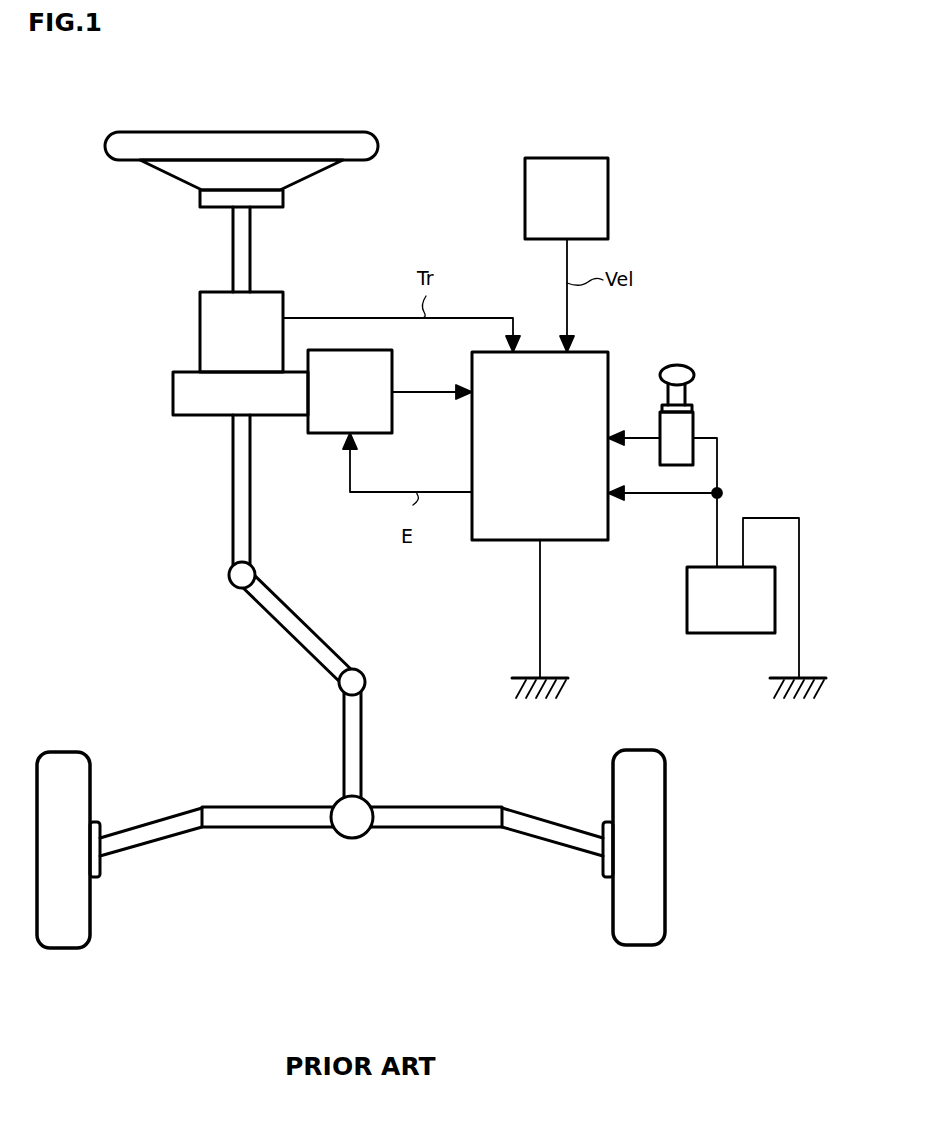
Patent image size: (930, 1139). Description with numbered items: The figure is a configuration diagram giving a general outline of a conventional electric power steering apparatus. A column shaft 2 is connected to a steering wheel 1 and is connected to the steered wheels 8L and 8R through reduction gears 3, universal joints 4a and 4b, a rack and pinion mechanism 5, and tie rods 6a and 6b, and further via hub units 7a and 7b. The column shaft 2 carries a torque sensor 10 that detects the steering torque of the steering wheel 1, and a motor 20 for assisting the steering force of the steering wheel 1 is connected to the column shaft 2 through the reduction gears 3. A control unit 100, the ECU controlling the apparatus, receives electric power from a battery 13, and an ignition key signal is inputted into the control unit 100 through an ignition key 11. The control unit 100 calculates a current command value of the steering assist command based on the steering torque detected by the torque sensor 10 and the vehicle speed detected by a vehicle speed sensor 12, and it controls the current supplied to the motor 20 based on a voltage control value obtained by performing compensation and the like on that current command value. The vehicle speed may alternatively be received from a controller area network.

The steering wheel 1 is at (378, 132).
The column shaft 2 is at (233, 252).
The reduction gears 3 is at (173, 398).
The universal joint 4a is at (229, 578).
The universal joint 4b is at (339, 685).
The rack and pinion mechanism 5 is at (365, 800).
The tie rod 6a is at (130, 823).
The tie rod 6b is at (530, 813).
The hub unit 7a is at (100, 872).
The hub unit 7b is at (603, 872).
The steered wheel 8L is at (90, 935).
The steered wheel 8R is at (613, 935).
The torque sensor 10 is at (200, 320).
The ignition key 11 is at (694, 373).
The vehicle speed sensor 12 is at (608, 168).
The battery 13 is at (687, 592).
The motor 20 is at (392, 358).
The control unit 100 is at (608, 357).